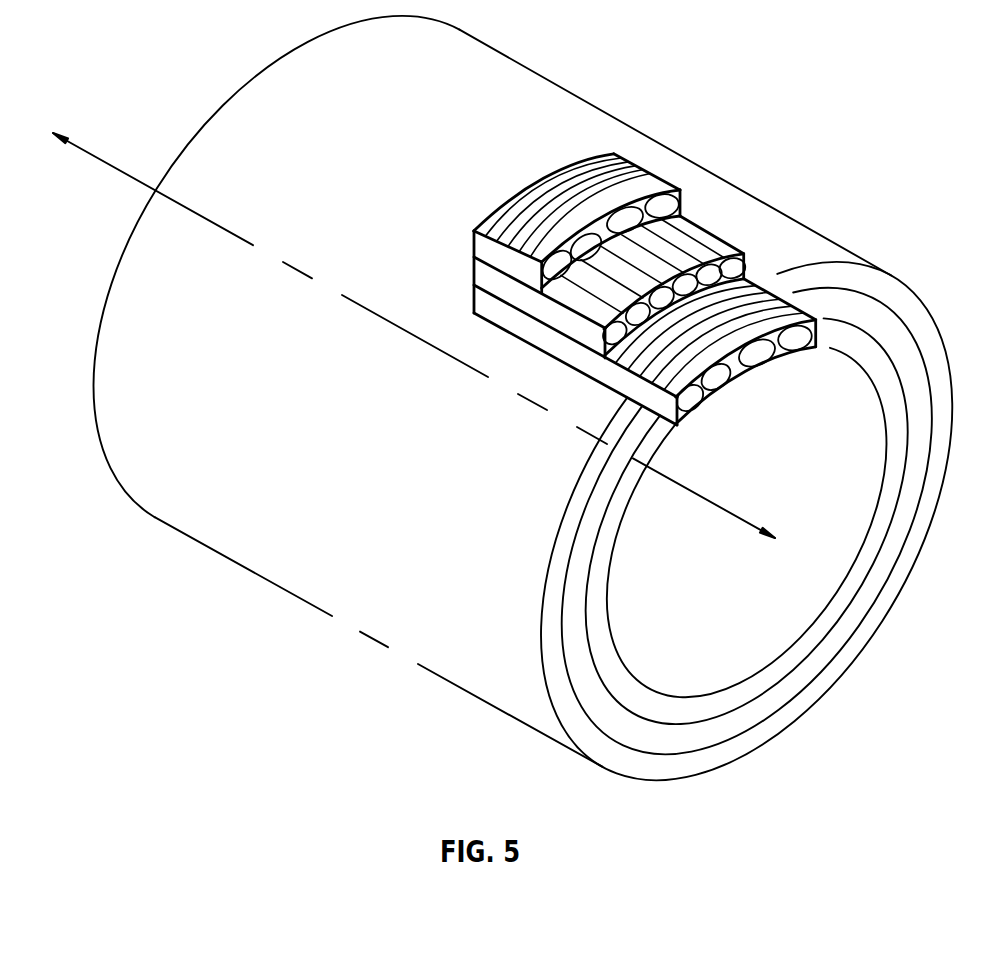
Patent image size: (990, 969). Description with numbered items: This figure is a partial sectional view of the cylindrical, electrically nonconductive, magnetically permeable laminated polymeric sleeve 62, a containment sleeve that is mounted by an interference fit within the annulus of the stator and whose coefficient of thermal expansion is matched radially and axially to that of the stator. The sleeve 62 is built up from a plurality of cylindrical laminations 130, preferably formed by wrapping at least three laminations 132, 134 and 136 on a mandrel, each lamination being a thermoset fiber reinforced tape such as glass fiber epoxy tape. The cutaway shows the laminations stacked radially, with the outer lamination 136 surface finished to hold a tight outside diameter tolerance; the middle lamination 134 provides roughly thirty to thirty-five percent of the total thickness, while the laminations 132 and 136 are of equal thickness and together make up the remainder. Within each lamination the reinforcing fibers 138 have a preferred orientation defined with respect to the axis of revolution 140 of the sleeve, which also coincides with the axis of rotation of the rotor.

The laminated polymeric sleeve 62 is at (523, 398).
The plurality of cylindrical laminations 130 is at (442, 440).
The lamination 132 is at (605, 358).
The lamination 134 is at (557, 305).
The outer lamination 136 is at (474, 313).
The fibers 138 is at (667, 207).
The axis of revolution 140 is at (727, 510).